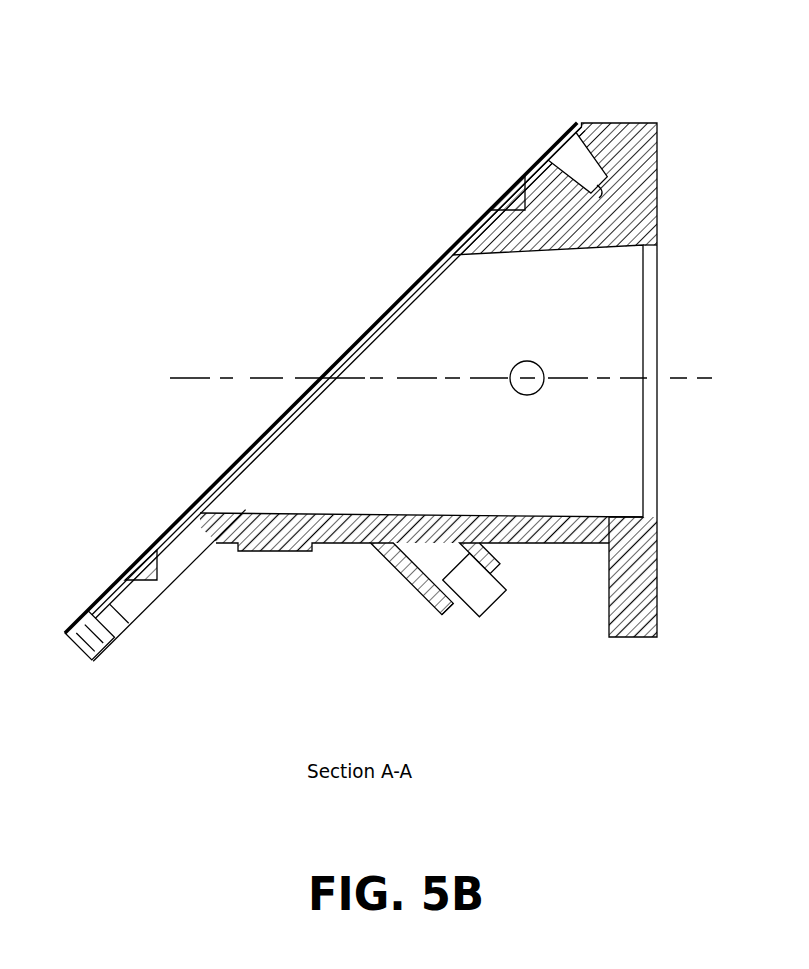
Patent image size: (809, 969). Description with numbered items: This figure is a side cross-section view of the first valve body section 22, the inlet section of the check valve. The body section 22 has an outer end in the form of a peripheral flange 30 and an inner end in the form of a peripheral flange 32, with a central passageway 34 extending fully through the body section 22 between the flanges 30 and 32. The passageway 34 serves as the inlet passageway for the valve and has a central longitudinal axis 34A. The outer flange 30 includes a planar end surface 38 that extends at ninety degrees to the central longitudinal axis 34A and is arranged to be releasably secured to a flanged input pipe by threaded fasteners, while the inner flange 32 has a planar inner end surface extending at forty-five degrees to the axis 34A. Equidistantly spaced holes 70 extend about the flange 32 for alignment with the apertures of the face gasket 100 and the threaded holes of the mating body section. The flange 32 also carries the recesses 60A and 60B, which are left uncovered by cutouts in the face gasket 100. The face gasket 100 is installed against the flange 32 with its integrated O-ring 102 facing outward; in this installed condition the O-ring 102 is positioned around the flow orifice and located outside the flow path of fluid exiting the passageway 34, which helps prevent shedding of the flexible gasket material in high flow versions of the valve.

The first valve body section 22 is at (398, 77).
The peripheral flange 30 is at (650, 622).
The peripheral flange 32 is at (143, 612).
The central passageway 34 is at (656, 367).
The central longitudinal axis 34A is at (247, 381).
The planar end surface 38 is at (664, 208).
The recess 60A is at (522, 190).
The recess 60B is at (153, 565).
The holes 70 is at (583, 162).
The face gasket 100 is at (172, 528).
The integrated O-ring 102 is at (418, 272).